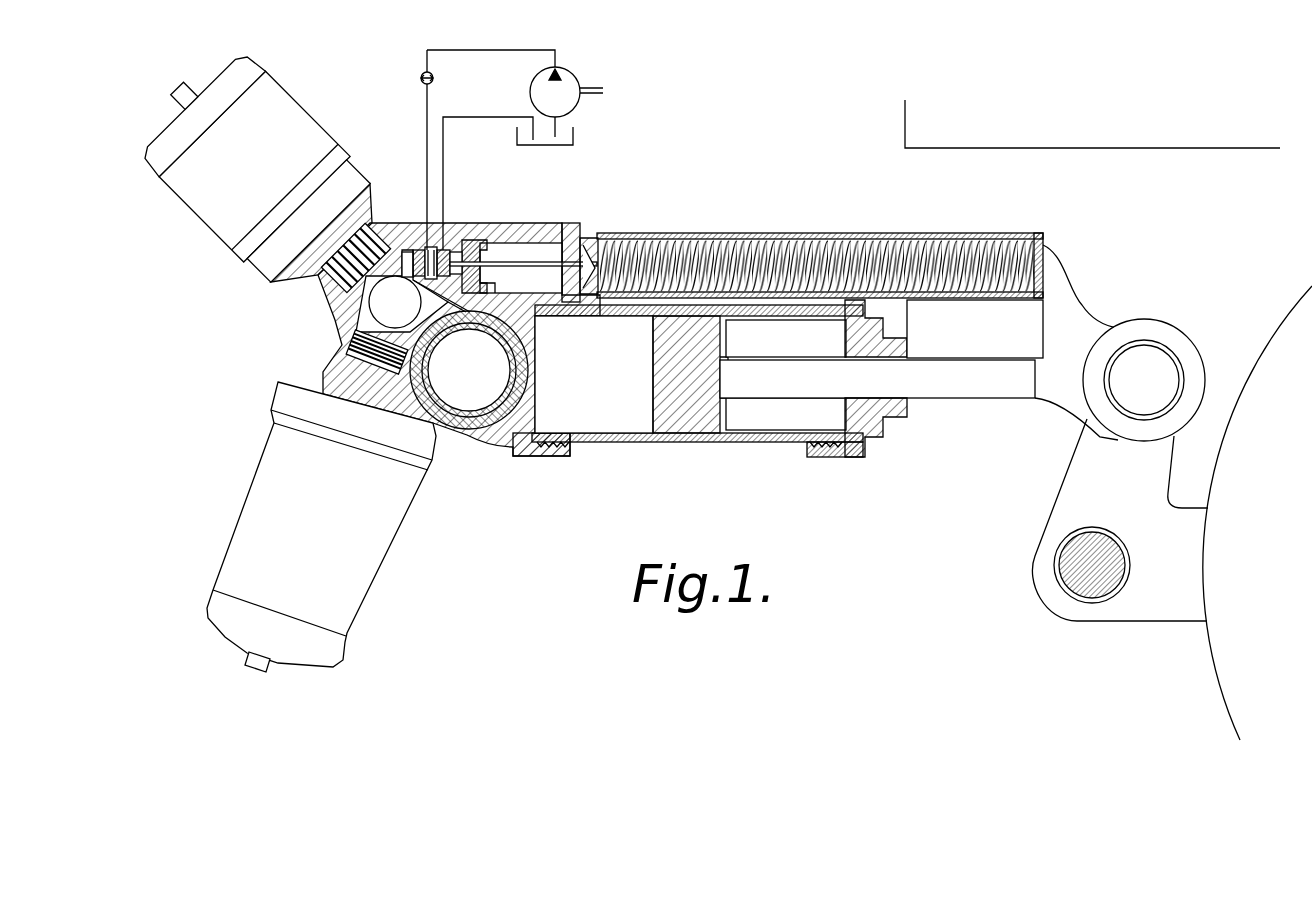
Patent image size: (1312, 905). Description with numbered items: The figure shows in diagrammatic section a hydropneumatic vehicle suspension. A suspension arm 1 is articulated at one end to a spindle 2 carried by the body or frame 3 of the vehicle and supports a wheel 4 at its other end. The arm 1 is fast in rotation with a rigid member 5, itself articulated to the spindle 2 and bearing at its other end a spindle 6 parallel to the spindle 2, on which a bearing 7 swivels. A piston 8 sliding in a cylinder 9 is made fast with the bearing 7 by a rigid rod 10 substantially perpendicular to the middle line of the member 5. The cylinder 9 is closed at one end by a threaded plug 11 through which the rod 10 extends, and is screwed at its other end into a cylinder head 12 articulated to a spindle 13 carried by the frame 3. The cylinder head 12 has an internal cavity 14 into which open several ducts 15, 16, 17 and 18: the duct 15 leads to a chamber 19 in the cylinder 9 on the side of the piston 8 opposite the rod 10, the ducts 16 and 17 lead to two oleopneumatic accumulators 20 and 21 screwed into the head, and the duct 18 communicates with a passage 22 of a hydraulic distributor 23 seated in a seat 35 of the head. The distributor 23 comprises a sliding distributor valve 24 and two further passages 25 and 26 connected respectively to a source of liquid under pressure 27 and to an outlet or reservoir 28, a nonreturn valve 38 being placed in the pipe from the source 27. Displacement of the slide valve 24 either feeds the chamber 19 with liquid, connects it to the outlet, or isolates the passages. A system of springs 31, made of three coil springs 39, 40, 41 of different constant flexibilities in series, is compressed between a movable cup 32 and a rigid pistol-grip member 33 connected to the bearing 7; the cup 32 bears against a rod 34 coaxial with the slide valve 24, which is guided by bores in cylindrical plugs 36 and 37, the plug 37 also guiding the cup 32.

The suspension arm 1 is at (1160, 596).
The spindle 2 is at (1073, 575).
The body or frame 3 is at (1011, 133).
The wheel 4 is at (1206, 685).
The rigid member 5 is at (1083, 472).
The spindle 6 is at (1152, 393).
The bearing 7 is at (1172, 340).
The piston 8 is at (680, 408).
The cylinder 9 is at (620, 456).
The rigid rod 10 is at (970, 383).
The threaded plug 11 is at (880, 408).
The cylinder head 12 is at (517, 418).
The spindle 13 is at (482, 412).
The internal cavity 14 is at (377, 308).
The duct 15 is at (500, 318).
The duct 16 is at (373, 330).
The duct 17 is at (340, 285).
The duct 18 is at (445, 332).
The chamber 19 is at (605, 387).
The oleopneumatic accumulator 20 is at (332, 532).
The oleopneumatic accumulator 21 is at (263, 178).
The passage 22 is at (490, 283).
The hydraulic distributor 23 is at (462, 242).
The distributor valve 24 is at (416, 258).
The passage 25 is at (430, 252).
The passage 26 is at (443, 255).
The source of liquid under pressure 27 is at (566, 82).
The outlet or reservoir 28 is at (573, 137).
The system of springs 31 is at (839, 233).
The movable cup 32 is at (620, 236).
The rigid member in the form of a pistol grip 33 is at (1068, 297).
The rod 34 is at (545, 261).
The seat 35 is at (407, 258).
The cylindrical plug 36 is at (481, 248).
The cylindrical plug 37 is at (590, 224).
The nonreturn valve 38 is at (420, 77).
The coil spring 39 is at (710, 243).
The coil spring 40 is at (780, 246).
The coil spring 41 is at (943, 252).